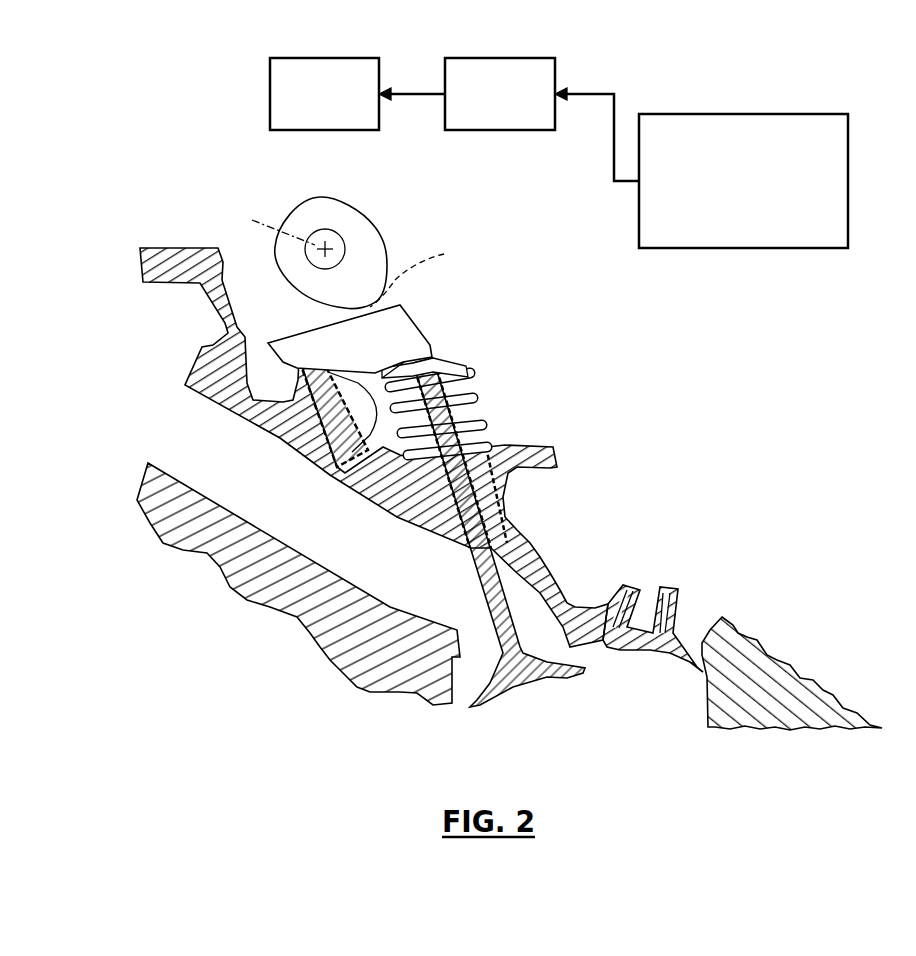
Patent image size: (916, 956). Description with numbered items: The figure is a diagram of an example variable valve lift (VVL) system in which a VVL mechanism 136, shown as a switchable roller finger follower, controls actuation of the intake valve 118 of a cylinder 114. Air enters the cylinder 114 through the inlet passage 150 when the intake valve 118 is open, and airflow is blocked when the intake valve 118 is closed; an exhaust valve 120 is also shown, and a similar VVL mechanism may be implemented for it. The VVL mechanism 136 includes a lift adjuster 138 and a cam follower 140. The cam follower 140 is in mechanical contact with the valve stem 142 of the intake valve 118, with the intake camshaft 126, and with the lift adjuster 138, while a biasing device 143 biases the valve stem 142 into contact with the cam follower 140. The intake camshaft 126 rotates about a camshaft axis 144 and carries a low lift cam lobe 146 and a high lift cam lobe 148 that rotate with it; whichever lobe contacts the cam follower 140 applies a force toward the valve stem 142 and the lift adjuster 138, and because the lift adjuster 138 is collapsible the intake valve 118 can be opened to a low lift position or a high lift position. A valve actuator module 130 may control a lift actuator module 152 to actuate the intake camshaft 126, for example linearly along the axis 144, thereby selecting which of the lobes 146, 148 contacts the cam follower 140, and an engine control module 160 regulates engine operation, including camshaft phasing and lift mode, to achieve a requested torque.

The cylinder 114 is at (709, 704).
The intake valve 118 is at (520, 623).
The exhaust valve 120 is at (680, 610).
The intake camshaft 126 is at (326, 229).
The valve actuator module 130 is at (496, 58).
The variable valve lift (VVL) mechanism 136 is at (486, 267).
The lift adjuster 138 is at (293, 433).
The cam follower 140 is at (418, 333).
The valve stem 142 is at (435, 356).
The biasing device 143 is at (488, 393).
The camshaft axis 144 is at (271, 213).
The low lift cam lobe 146 is at (372, 224).
The high lift cam lobe 148 is at (426, 276).
The inlet passage 150 is at (387, 605).
The lift actuator module 152 is at (320, 58).
The engine control module (ECM) 160 is at (740, 114).